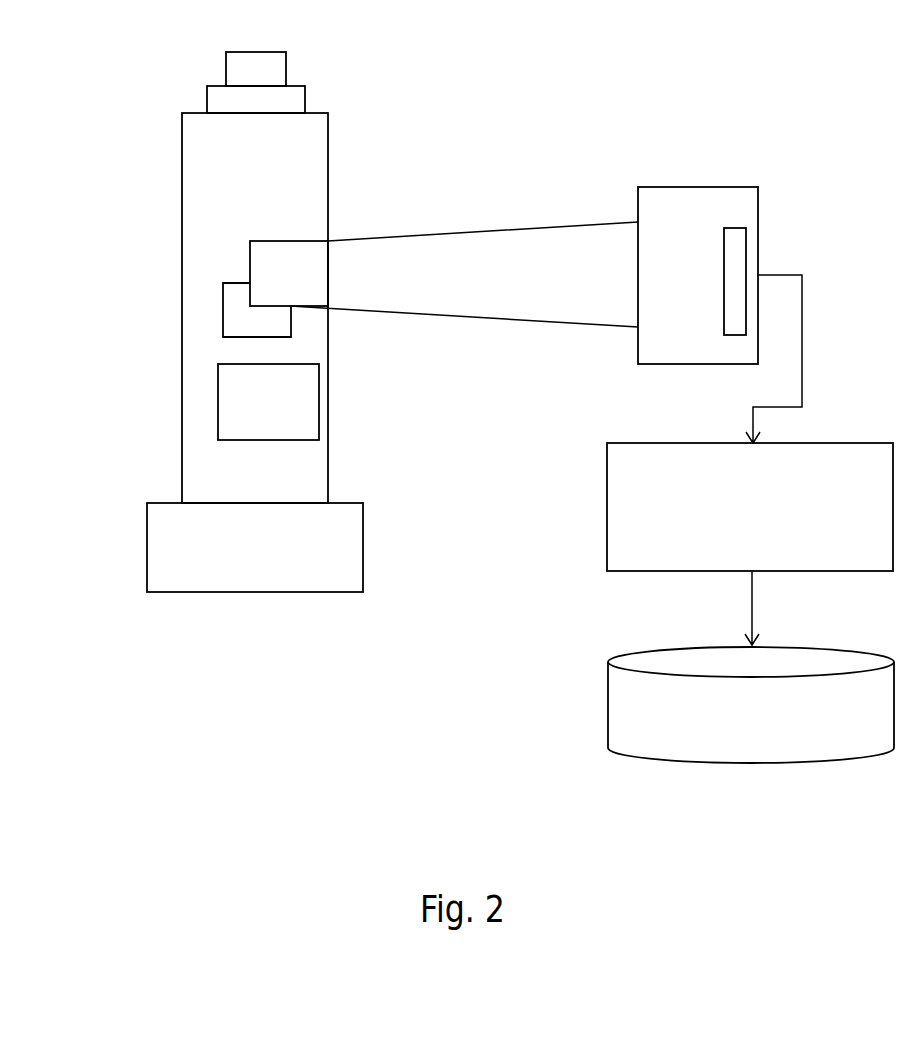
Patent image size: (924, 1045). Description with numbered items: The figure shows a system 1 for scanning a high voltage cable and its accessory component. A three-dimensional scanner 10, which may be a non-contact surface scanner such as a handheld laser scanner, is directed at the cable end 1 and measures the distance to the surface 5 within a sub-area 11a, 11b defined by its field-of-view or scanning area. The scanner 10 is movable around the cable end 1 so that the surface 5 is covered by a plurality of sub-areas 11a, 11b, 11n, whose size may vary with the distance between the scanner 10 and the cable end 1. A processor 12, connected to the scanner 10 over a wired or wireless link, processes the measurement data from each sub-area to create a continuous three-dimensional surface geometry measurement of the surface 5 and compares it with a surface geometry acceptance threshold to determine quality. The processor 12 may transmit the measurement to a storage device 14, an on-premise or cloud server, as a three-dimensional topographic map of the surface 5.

The cable end 1 is at (123, 145).
The surface 5 is at (227, 476).
The 3-dimensional scanner 10 is at (689, 183).
The sub-area 11a is at (285, 253).
The sub-area 11b is at (280, 329).
The n-th component 11n is at (280, 403).
The processor 12 is at (750, 507).
The storage device 14 is at (751, 705).